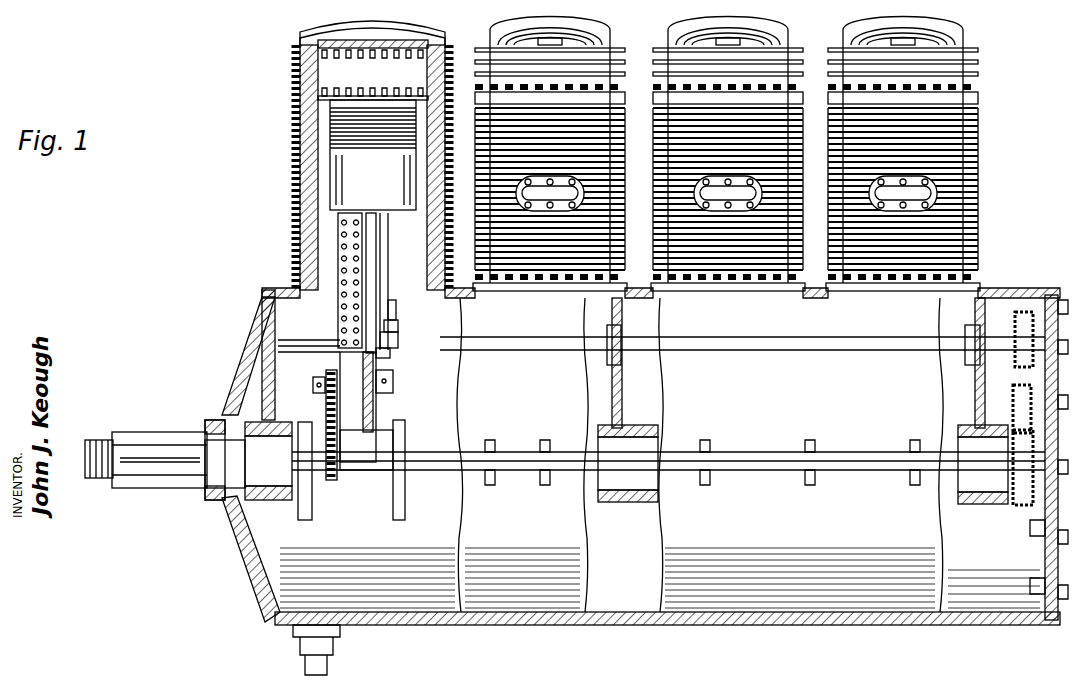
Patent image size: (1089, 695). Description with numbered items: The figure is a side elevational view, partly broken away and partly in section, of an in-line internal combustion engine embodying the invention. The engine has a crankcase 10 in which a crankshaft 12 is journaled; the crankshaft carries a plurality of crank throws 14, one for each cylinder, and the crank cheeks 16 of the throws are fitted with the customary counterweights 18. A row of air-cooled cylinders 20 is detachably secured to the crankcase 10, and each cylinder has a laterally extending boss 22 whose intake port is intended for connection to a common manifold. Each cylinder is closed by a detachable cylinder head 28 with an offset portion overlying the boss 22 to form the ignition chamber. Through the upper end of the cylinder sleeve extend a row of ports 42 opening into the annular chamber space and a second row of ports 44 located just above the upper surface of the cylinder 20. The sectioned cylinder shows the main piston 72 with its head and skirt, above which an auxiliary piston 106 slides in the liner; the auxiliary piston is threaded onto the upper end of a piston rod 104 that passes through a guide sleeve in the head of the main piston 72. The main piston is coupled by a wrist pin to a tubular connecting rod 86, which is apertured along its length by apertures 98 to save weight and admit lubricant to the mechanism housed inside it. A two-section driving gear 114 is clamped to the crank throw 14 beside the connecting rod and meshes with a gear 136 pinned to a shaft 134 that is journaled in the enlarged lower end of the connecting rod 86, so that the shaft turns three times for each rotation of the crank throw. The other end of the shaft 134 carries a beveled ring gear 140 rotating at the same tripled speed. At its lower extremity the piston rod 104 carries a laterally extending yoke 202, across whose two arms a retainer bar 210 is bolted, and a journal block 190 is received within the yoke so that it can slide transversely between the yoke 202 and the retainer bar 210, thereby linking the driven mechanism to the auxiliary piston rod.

The crankcase 10 is at (252, 345).
The crankshaft 12 is at (445, 472).
The crank throw 14 is at (386, 432).
The crank cheek 16 is at (397, 465).
The counterweight 18 is at (395, 492).
The cylinder 20 is at (355, 145).
The boss 22 is at (733, 180).
The cylinder head 28 is at (410, 22).
The ports 42 is at (332, 52).
The ports 44 is at (337, 92).
The main piston 72 is at (343, 136).
The connecting rod 86 is at (376, 282).
The apertures 98 is at (342, 312).
The piston rod 104 is at (397, 310).
The auxiliary piston 106 is at (366, 118).
The driving gear 114 is at (330, 480).
The shaft 134 is at (313, 383).
The gear 136 is at (309, 347).
The beveled ring gear 140 is at (394, 380).
The journal block 190 is at (399, 343).
The yoke 202 is at (399, 327).
The retainer bar 210 is at (392, 356).